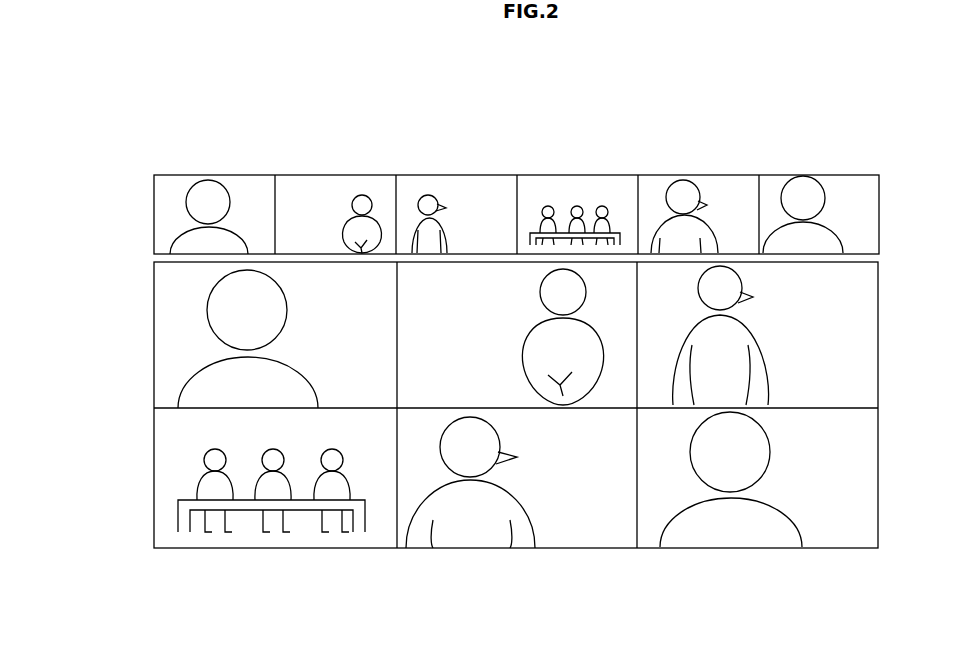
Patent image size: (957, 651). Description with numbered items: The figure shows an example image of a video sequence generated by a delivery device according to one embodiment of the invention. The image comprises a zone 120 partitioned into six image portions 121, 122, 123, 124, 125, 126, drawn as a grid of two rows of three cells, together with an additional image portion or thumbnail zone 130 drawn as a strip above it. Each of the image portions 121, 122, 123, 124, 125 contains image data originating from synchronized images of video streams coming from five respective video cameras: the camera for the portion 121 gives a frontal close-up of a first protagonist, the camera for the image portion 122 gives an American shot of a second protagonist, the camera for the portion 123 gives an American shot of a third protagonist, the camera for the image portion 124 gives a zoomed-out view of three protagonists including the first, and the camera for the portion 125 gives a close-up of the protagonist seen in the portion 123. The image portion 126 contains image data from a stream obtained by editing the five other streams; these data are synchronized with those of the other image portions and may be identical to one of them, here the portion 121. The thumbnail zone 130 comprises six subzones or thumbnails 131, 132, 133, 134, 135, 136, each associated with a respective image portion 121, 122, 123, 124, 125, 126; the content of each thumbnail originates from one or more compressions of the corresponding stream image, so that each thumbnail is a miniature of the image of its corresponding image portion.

The zone 120 is at (154, 320).
The image portion 121 is at (168, 383).
The image portion 122 is at (503, 393).
The image portion 123 is at (862, 360).
The image portion 124 is at (370, 540).
The image portion 125 is at (585, 538).
The image portion 126 is at (861, 535).
The thumbnail zone 130 is at (154, 233).
The thumbnail 131 is at (236, 183).
The thumbnail 132 is at (348, 183).
The thumbnail 133 is at (438, 183).
The thumbnail 134 is at (565, 182).
The thumbnail 135 is at (737, 180).
The thumbnail 136 is at (827, 180).